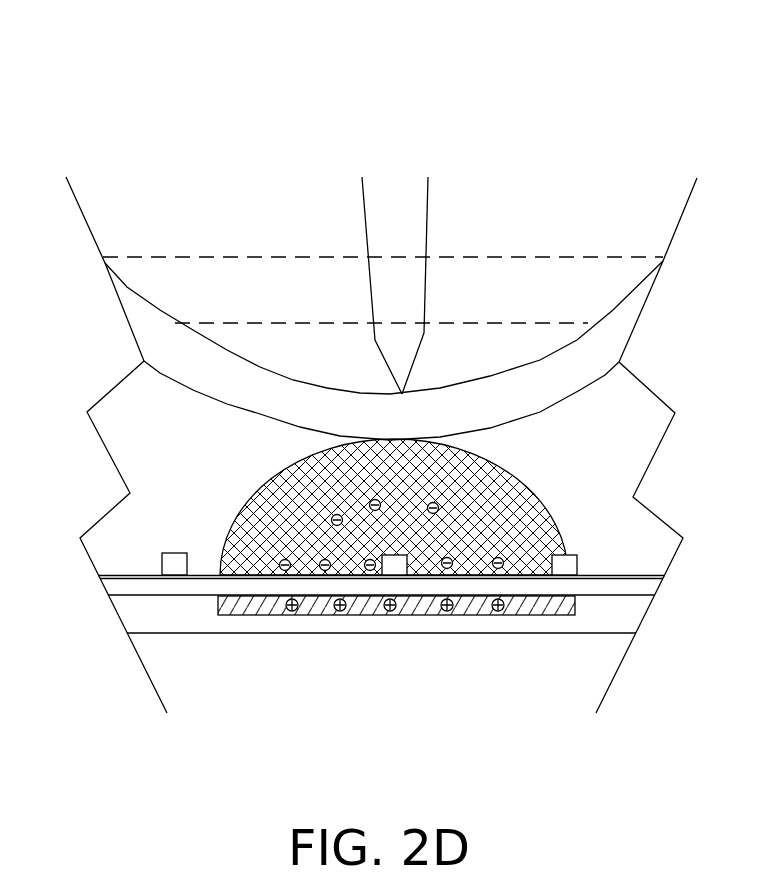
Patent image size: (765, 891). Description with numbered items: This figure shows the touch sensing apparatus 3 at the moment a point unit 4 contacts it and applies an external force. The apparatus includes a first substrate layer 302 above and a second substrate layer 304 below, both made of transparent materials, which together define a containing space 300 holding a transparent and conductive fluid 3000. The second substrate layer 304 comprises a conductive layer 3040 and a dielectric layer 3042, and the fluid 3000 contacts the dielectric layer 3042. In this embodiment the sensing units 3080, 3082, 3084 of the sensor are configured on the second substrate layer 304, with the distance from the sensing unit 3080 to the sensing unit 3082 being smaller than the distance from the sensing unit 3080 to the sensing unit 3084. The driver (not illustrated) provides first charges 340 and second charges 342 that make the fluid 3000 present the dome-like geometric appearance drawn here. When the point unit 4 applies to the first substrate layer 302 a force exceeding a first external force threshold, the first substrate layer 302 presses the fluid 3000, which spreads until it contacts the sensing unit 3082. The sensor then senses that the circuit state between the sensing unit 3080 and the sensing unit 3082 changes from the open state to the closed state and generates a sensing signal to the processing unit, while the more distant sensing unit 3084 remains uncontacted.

The touch sensing apparatus 3 is at (176, 104).
The containing space 300 is at (168, 405).
The first substrate layer 302 is at (587, 323).
The point unit 4 is at (375, 343).
The fluid 3000 is at (268, 479).
The second charges 342 is at (412, 553).
The sensing unit 3080 is at (408, 557).
The sensing unit 3082 is at (578, 562).
The sensing unit 3084 is at (162, 558).
The dielectric layer 3042 is at (185, 587).
The conductive layer 3040 is at (273, 605).
The second substrate layer 304 is at (345, 633).
The first charges 340 is at (500, 607).